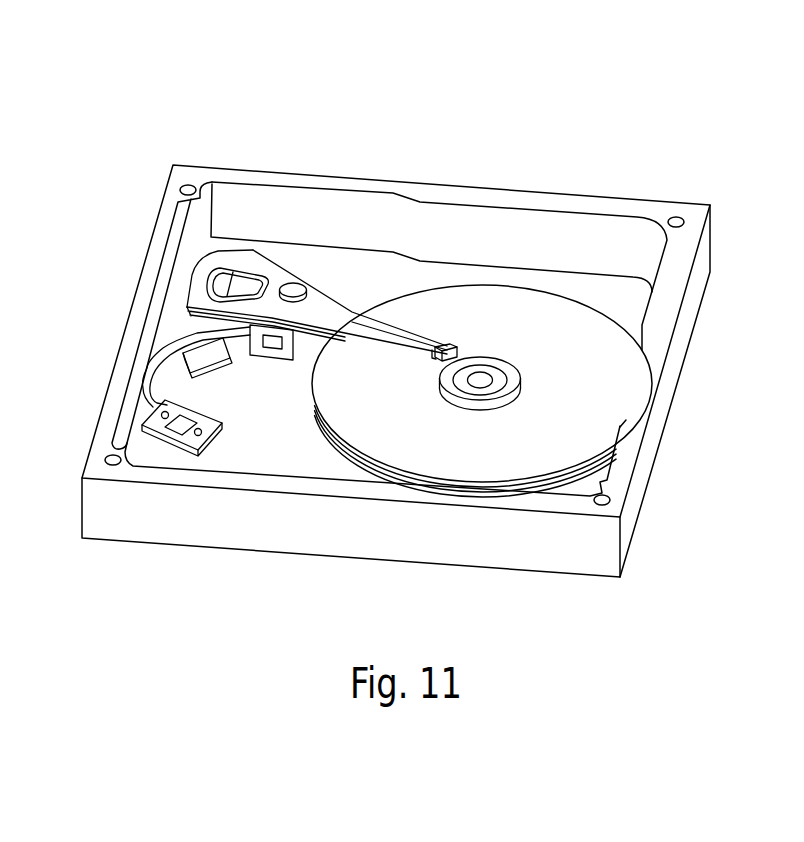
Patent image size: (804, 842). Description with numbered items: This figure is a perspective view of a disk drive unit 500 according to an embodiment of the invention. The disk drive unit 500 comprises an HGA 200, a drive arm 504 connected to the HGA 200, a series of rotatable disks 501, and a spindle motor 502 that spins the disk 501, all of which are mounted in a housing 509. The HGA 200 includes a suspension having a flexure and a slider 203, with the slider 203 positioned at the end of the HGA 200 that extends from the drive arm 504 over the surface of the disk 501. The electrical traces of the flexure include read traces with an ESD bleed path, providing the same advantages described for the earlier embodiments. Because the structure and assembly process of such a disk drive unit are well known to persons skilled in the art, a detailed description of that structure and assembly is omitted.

The disk drive unit 500 is at (72, 33).
The housing 509 is at (643, 245).
The rotatable disks 501 is at (557, 323).
The spindle motor 502 is at (480, 378).
The drive arm 504 is at (316, 295).
The HGA 200 is at (383, 330).
The slider 203 is at (447, 345).